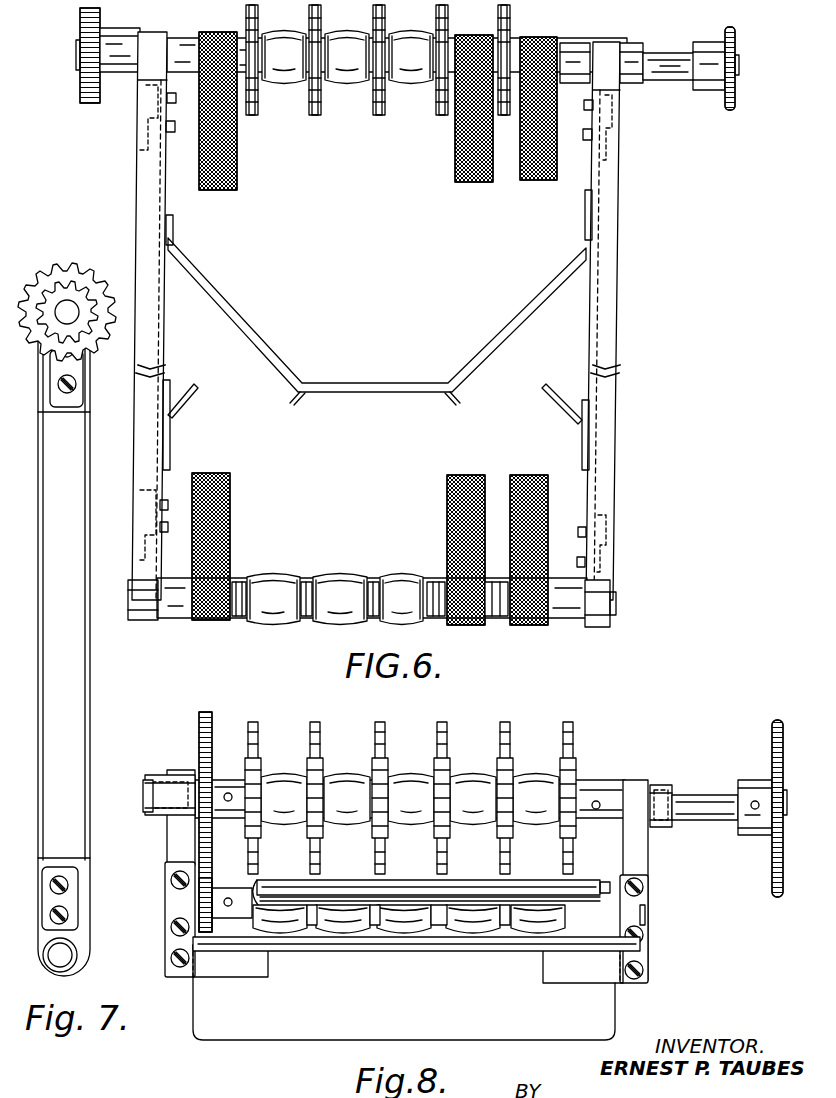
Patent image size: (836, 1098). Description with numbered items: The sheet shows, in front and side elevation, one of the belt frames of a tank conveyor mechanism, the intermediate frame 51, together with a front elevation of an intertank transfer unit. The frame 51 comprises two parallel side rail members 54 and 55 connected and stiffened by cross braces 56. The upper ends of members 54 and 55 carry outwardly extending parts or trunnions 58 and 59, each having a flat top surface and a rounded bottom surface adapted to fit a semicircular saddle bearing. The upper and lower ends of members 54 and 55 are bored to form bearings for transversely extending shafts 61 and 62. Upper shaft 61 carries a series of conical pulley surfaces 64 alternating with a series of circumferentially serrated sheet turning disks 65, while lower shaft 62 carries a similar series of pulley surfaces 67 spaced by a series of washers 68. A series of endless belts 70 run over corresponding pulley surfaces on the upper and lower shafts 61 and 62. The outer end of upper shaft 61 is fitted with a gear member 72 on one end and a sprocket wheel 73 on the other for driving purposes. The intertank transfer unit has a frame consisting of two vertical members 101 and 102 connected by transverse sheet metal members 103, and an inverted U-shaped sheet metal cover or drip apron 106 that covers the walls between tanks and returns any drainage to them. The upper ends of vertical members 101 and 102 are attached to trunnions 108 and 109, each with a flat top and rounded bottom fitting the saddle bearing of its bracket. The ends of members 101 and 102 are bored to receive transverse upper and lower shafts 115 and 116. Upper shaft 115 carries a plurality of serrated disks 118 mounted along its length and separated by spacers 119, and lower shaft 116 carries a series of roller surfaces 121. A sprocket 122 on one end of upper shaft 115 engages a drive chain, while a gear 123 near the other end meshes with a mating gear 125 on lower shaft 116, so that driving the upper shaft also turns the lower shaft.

In FIG. 6, the intermediate frame 51 is at (694, 262).
In FIG. 6, the side rail member 54 is at (140, 215).
In FIG. 6, the side rail member 55 is at (612, 228).
In FIG. 7, the side rail member 55 is at (76, 660).
In FIG. 6, the cross braces 56 is at (472, 354).
In FIG. 6, the trunnion 58 is at (130, 40).
In FIG. 6, the trunnion 59 is at (630, 52).
In FIG. 6, the upper shaft 61 is at (678, 72).
In FIG. 7, the upper shaft 61 is at (76, 306).
In FIG. 6, the lower shaft 62 is at (616, 604).
In FIG. 7, the lower shaft 62 is at (62, 956).
In FIG. 6, the conical pulley surfaces 64 is at (411, 85).
In FIG. 6, the serrated sheet turning disks 65 is at (376, 12).
In FIG. 6, the pulley surfaces 67 is at (282, 580).
In FIG. 6, the washers 68 is at (430, 582).
In FIG. 6, the endless belts 70 is at (532, 180).
In FIG. 6, the gear member 72 is at (88, 88).
In FIG. 6, the sprocket wheel 73 is at (735, 40).
In FIG. 8, the vertical member 101 is at (172, 838).
In FIG. 8, the vertical member 102 is at (644, 843).
In FIG. 8, the transverse sheet metal members 103 is at (603, 890).
In FIG. 8, the drip apron 106 is at (200, 1002).
In FIG. 8, the trunnion 108 is at (160, 780).
In FIG. 8, the trunnion 109 is at (652, 790).
In FIG. 8, the upper shaft 115 is at (712, 812).
In FIG. 8, the lower shaft 116 is at (647, 910).
In FIG. 8, the serrated disks 118 is at (500, 727).
In FIG. 8, the spacers 119 is at (342, 790).
In FIG. 8, the roller surfaces 121 is at (466, 932).
In FIG. 8, the sprocket 122 is at (774, 742).
In FIG. 8, the gear 123 is at (211, 720).
In FIG. 8, the mating gear 125 is at (206, 896).